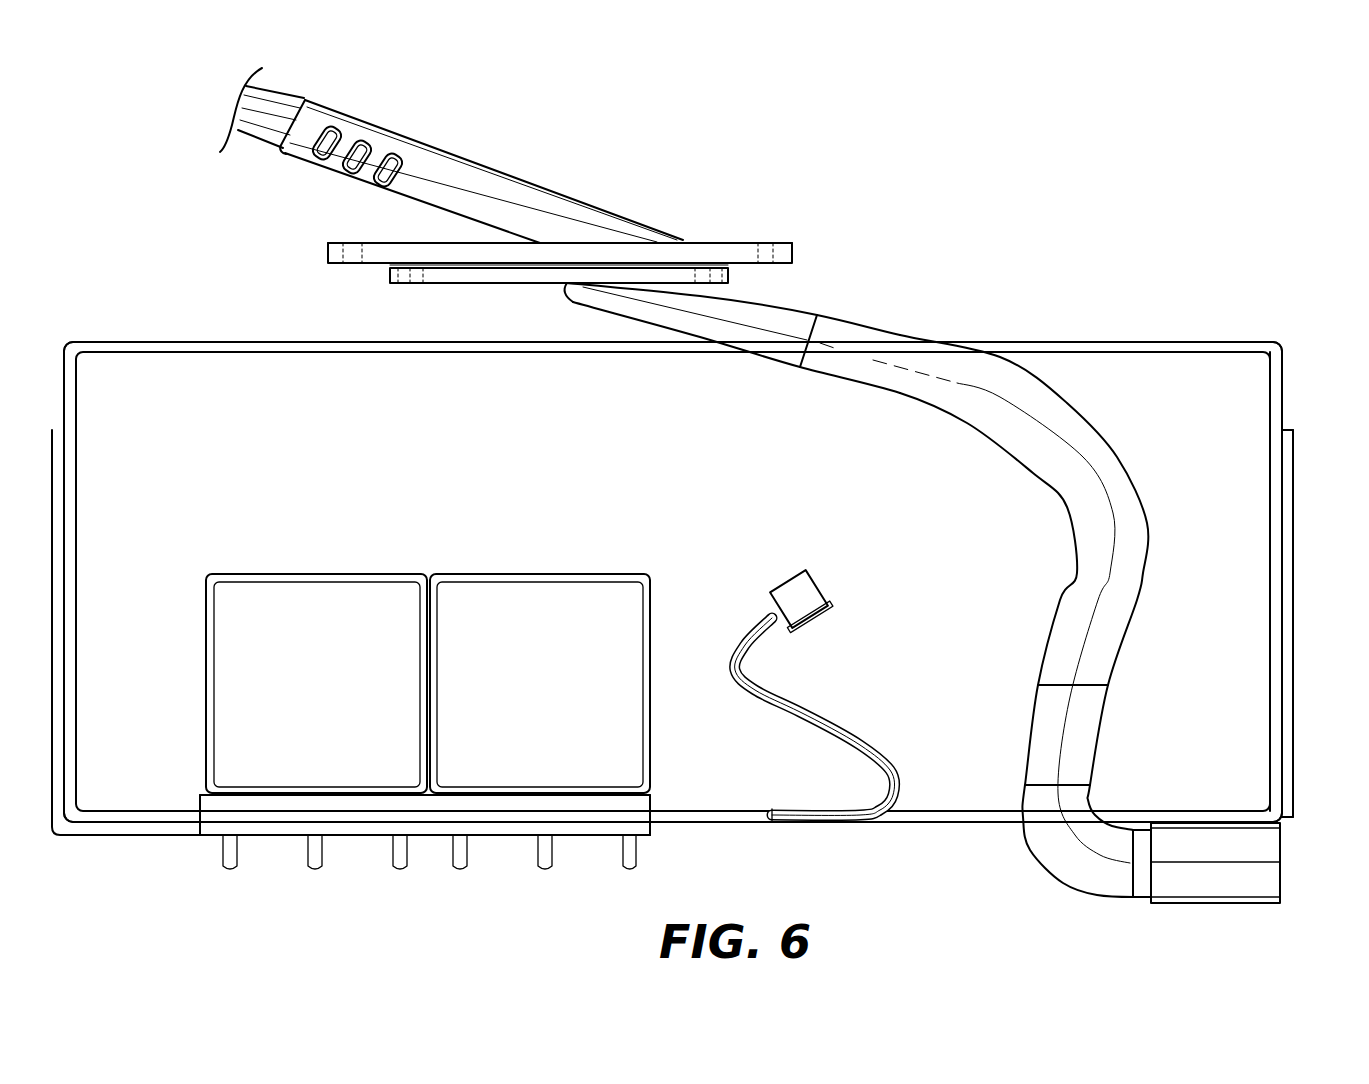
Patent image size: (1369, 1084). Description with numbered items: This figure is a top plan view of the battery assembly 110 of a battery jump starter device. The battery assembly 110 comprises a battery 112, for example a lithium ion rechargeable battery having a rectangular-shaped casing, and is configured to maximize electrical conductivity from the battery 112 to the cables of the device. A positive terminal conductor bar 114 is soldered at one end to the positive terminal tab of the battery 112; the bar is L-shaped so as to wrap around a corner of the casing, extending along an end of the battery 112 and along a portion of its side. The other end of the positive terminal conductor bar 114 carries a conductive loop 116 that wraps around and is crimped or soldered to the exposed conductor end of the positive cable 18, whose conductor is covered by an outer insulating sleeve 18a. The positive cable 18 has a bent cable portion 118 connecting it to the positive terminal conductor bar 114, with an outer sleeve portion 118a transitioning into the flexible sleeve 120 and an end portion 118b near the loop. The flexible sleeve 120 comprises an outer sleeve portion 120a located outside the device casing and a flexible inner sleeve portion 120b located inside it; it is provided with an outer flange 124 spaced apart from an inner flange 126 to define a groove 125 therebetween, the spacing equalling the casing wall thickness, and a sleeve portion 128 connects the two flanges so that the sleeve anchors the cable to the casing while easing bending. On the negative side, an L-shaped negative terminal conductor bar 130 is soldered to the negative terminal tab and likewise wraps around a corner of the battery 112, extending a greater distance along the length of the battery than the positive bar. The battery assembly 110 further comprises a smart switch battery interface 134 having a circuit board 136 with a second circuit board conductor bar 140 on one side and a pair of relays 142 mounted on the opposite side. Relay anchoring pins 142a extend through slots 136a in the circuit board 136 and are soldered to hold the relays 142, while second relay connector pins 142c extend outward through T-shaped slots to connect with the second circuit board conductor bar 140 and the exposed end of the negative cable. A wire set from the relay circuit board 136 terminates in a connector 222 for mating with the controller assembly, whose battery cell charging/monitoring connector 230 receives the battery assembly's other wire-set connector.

The positive cable 18 is at (272, 82).
The outer insulating sleeve 18a is at (280, 107).
The battery assembly 110 is at (1255, 304).
The battery 112 is at (140, 338).
The positive terminal conductor bar 114 is at (1180, 378).
The conductive loop 116 is at (1222, 883).
The bent cable portion 118 is at (1026, 613).
The outer sleeve portion 118a is at (992, 380).
The duct outlet end 118b is at (1143, 883).
The flexible sleeve 120 is at (618, 246).
The outer sleeve portion 120a is at (530, 197).
The flexible inner sleeve portion 120b is at (787, 302).
The outer flange 124 is at (335, 125).
The groove 125 is at (558, 263).
The inner flange 126 is at (453, 278).
The sleeve portion 128 is at (470, 263).
The negative terminal conductor bar 130 is at (57, 552).
The smart switch battery interface 134 is at (193, 800).
The circuit board 136 is at (210, 802).
The second circuit board conductor bar 140 is at (213, 830).
The slots 136a is at (230, 870).
The relays 142 is at (297, 697).
The relay anchoring pins 142a is at (400, 870).
The second relay connector pins 142c is at (315, 870).
The connector 222 is at (803, 613).
The battery cell charging/monitoring connector 230 is at (867, 737).